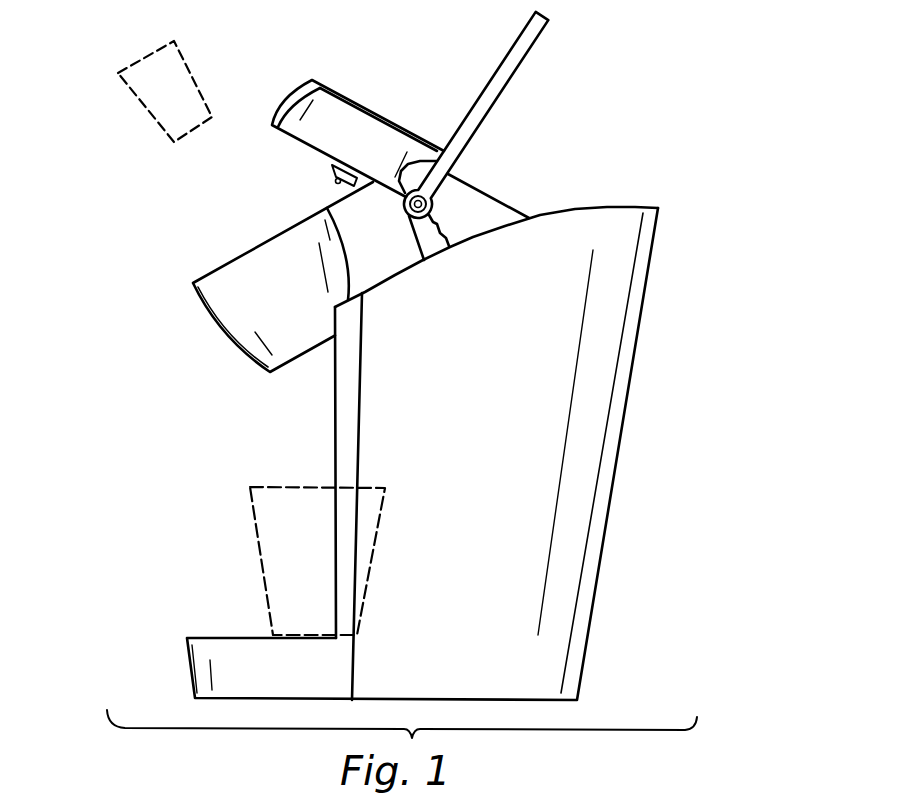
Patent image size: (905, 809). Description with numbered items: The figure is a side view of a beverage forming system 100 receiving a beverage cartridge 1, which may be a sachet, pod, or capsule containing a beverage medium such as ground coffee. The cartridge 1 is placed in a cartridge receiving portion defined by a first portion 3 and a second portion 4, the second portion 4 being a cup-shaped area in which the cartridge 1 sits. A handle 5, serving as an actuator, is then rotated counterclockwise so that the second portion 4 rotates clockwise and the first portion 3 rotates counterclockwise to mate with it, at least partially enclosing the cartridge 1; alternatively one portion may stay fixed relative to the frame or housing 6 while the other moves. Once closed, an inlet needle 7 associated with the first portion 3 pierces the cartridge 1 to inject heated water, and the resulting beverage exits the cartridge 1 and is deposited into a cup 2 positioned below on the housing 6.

The beverage cartridge 1 is at (141, 105).
The cup 2 is at (255, 528).
The first portion 3 is at (350, 110).
The second portion 4 is at (223, 323).
The handle 5 is at (524, 47).
The housing 6 is at (634, 383).
The inlet needle 7 is at (336, 182).
The beverage forming system 100 is at (672, 197).